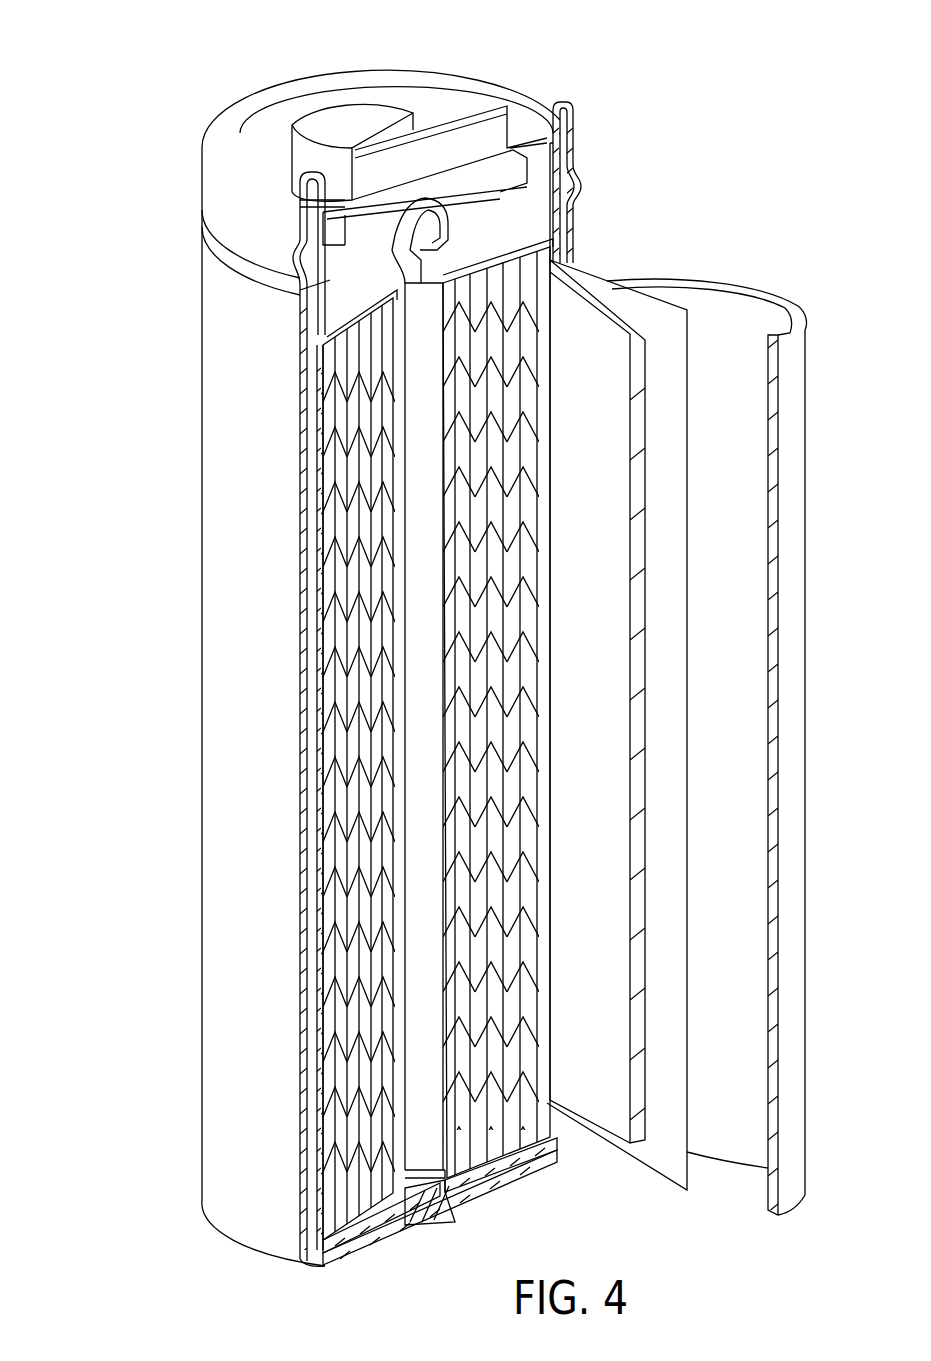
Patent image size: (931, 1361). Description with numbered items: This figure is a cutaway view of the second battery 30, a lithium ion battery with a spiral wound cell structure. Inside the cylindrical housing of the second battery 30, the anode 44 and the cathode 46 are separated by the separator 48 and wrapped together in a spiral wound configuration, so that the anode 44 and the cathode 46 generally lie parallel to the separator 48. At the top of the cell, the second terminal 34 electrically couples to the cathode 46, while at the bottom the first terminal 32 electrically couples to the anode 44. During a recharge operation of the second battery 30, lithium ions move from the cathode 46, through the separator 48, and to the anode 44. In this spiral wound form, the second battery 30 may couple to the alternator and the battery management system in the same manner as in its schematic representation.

The second battery 30 is at (172, 574).
The first terminal 32 is at (438, 1218).
The second terminal 34 is at (362, 118).
The anode 44 is at (612, 1105).
The cathode 46 is at (738, 315).
The separator 48 is at (680, 1160).